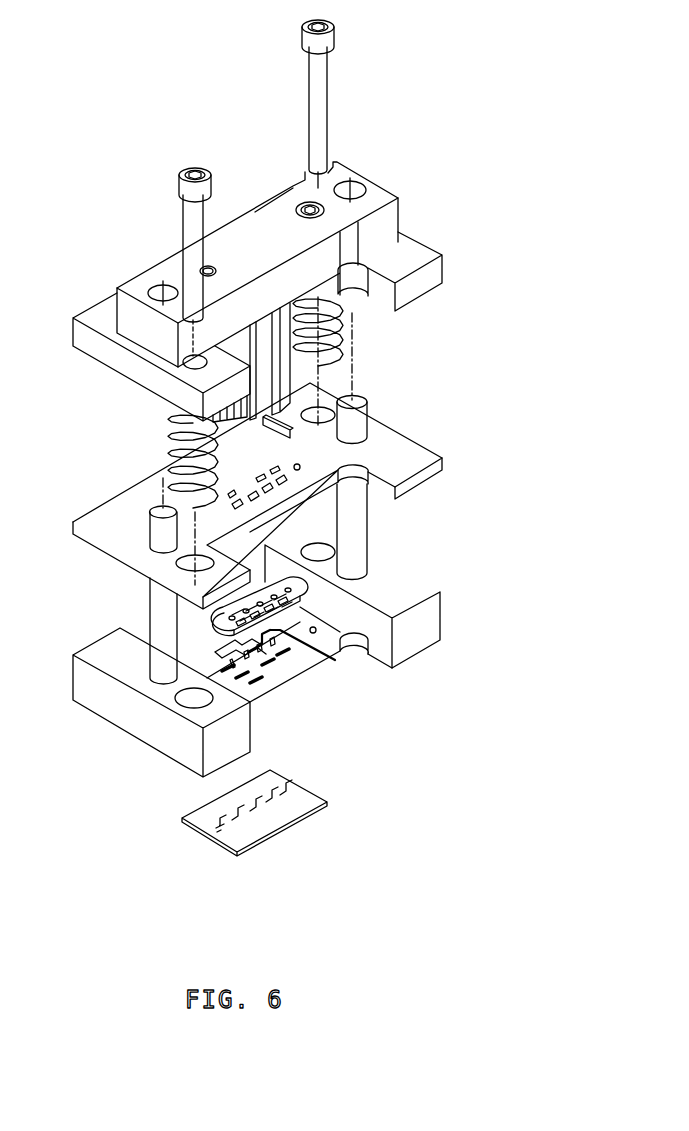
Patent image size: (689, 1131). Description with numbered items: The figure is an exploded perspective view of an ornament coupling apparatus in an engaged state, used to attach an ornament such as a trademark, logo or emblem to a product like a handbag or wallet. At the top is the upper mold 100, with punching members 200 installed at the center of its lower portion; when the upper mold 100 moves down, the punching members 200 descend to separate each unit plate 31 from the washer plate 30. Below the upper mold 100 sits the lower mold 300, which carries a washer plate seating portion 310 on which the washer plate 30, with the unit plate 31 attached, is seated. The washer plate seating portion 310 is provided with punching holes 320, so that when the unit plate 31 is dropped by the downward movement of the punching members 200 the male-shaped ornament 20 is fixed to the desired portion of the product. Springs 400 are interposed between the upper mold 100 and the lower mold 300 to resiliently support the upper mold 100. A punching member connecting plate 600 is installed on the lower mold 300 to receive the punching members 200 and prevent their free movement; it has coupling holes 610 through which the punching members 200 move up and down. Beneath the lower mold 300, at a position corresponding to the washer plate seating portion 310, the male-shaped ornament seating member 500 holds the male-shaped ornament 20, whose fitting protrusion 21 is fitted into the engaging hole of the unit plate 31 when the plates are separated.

The upper mold 100 is at (100, 313).
The punching members 200 is at (293, 373).
The lower mold 300 is at (97, 698).
The spring 400 is at (350, 310).
The male-shaped ornament seating member 500 is at (303, 805).
The punching member connecting plate 600 is at (103, 510).
The coupling holes 610 is at (300, 466).
The washer plate 30 is at (300, 592).
The unit plate 31 is at (300, 604).
The washer plate seating portion 310 is at (297, 653).
The punching holes 320 is at (280, 665).
The male-shaped ornament 20 is at (237, 853).
The fitting protrusion 21 is at (242, 822).